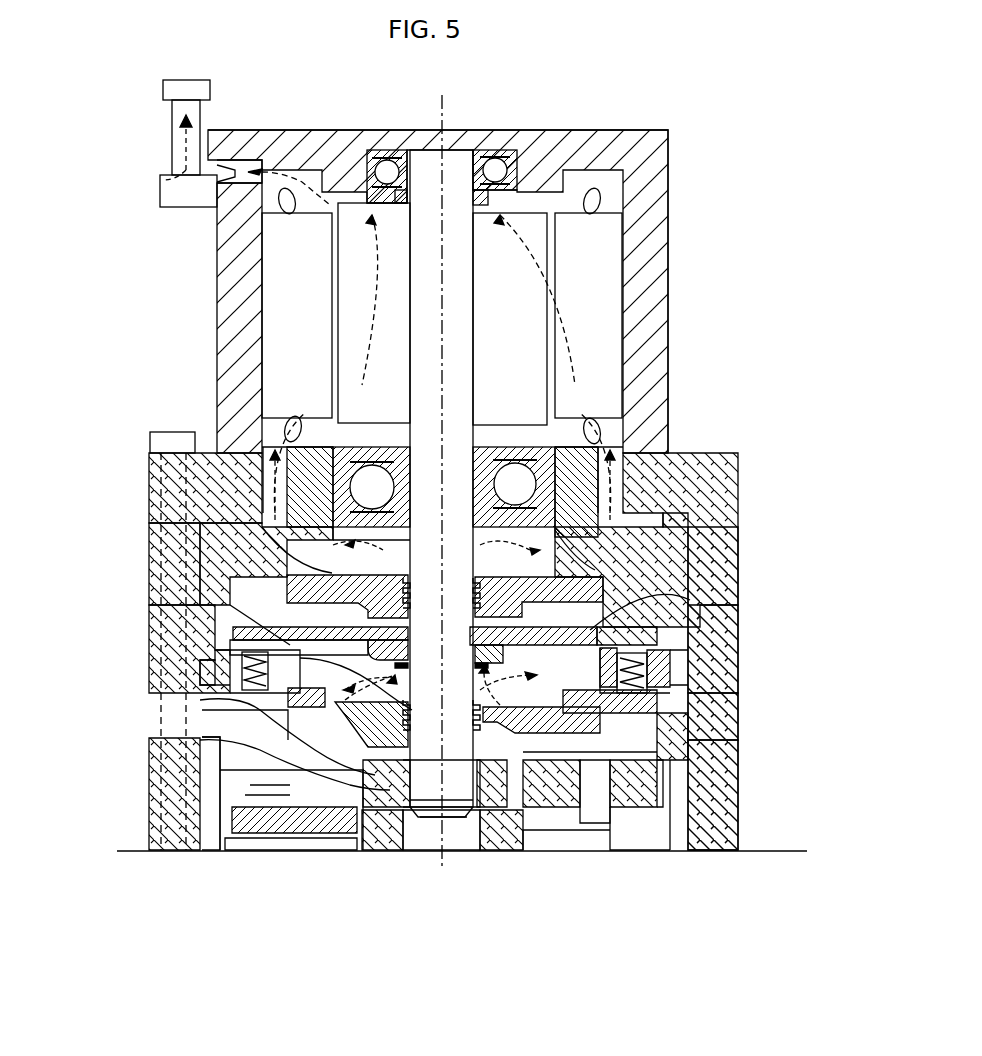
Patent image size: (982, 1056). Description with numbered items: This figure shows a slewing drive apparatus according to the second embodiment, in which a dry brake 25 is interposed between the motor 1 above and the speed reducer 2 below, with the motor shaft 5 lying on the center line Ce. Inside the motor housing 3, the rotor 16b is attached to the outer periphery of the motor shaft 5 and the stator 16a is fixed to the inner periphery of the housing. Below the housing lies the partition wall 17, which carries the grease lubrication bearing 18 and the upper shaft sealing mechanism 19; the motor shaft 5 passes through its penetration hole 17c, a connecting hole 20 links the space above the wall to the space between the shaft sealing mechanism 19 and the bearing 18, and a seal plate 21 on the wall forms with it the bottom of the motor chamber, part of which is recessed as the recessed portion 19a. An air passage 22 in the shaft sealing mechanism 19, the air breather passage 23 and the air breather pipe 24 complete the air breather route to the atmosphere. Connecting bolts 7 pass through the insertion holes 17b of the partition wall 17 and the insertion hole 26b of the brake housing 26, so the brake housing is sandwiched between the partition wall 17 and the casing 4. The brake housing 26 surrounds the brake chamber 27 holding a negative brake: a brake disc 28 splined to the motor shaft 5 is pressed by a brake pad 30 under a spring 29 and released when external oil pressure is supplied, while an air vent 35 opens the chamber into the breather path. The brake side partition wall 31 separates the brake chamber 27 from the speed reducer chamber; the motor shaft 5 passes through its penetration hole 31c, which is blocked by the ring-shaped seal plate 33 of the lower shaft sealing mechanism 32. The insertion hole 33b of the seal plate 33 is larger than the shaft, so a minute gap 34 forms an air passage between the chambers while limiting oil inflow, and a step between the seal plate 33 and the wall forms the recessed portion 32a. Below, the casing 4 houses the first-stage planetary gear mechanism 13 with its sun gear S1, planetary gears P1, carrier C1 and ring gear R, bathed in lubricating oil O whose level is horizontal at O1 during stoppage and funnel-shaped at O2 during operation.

The motor 1 is at (203, 320).
The speed reducer 2 is at (145, 805).
The motor housing 3 is at (668, 372).
The casing 4 is at (148, 762).
The motor shaft 5 is at (473, 345).
The connecting bolts 7 is at (180, 431).
The planetary gear mechanism 13 is at (765, 760).
The stator 16a is at (612, 298).
The rotor 16b is at (372, 208).
The partition wall 17 is at (150, 554).
The insertion holes 17b is at (180, 537).
The penetration hole 17c is at (353, 565).
The grease lubrication bearing 18 is at (378, 450).
The shaft sealing mechanism 19 is at (690, 593).
The recessed portion 19a is at (422, 536).
The connecting hole 20 is at (255, 506).
The seal plate 21 is at (582, 578).
The air passage 22 is at (406, 576).
The air breather passage 23 is at (235, 168).
The air breather pipe 24 is at (172, 134).
The dry brake 25 is at (765, 625).
The brake housing 26 is at (150, 634).
The insertion hole 26b is at (180, 665).
The brake chamber 27 is at (500, 815).
The brake disc 28 is at (150, 585).
The spring 29 is at (288, 652).
The brake pad 30 is at (600, 663).
The partition wall 31 is at (682, 754).
The penetration hole 31c is at (332, 694).
The shaft sealing mechanism 32 is at (388, 815).
The recessed portion 32a is at (408, 690).
The seal plate 33 is at (556, 810).
The insertion hole 33b is at (442, 815).
The gap 34 is at (450, 815).
The air vent 35 is at (270, 628).
The center line Ce is at (442, 110).
The carrier C1 is at (627, 820).
The lubricating oil O is at (290, 795).
The oil level during stoppage O1 is at (200, 740).
The oil level during operation O2 is at (200, 700).
The planetary gears P1 is at (654, 708).
The ring gears R is at (214, 852).
The sun gear S1 is at (385, 750).